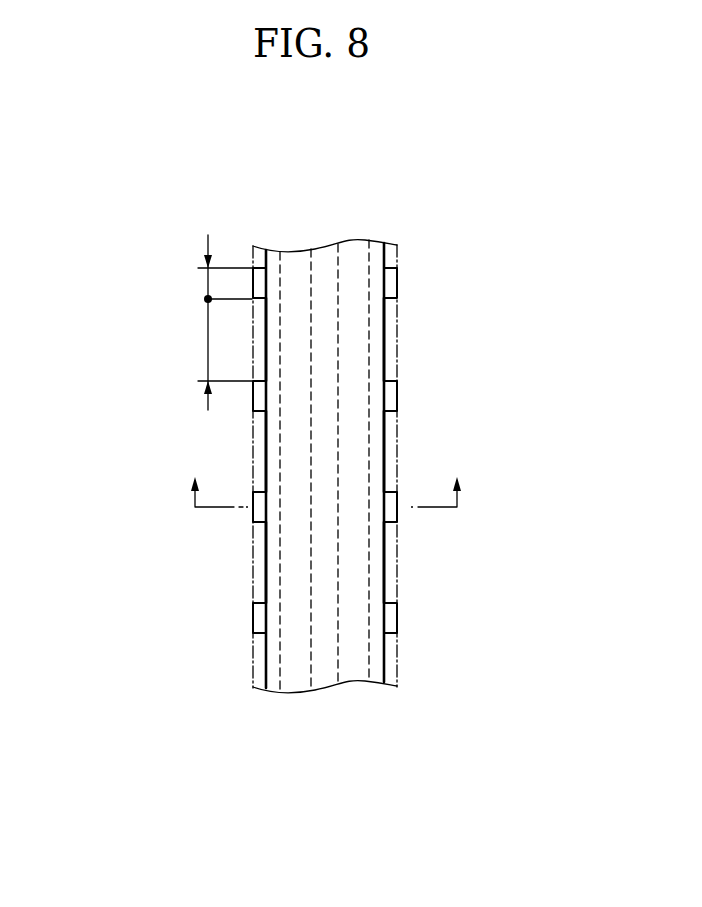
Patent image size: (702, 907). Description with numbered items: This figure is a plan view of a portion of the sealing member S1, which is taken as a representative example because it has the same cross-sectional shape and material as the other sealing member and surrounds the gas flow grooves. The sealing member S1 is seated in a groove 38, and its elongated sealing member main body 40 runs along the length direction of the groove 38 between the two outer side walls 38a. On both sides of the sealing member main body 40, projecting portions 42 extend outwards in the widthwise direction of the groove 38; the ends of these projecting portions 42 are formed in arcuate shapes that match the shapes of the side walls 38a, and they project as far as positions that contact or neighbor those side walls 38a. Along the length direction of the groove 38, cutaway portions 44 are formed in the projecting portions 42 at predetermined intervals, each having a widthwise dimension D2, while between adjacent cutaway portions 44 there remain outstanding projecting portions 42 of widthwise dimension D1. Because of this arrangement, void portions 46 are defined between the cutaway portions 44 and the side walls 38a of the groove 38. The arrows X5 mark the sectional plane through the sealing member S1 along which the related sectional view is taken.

The groove 38 is at (248, 680).
The side wall of the groove 38a is at (253, 661).
The sealing member main body 40 is at (297, 263).
The projecting portion 42 is at (255, 620).
The cutaway portion 44 is at (266, 458).
The void portion 46 is at (258, 441).
The sealing member S1 is at (356, 216).
The widthwise dimension of the projecting portion D1 is at (208, 287).
The widthwise dimension of the cutaway portion D2 is at (208, 350).
The sectional plane arrows X5 is at (326, 492).